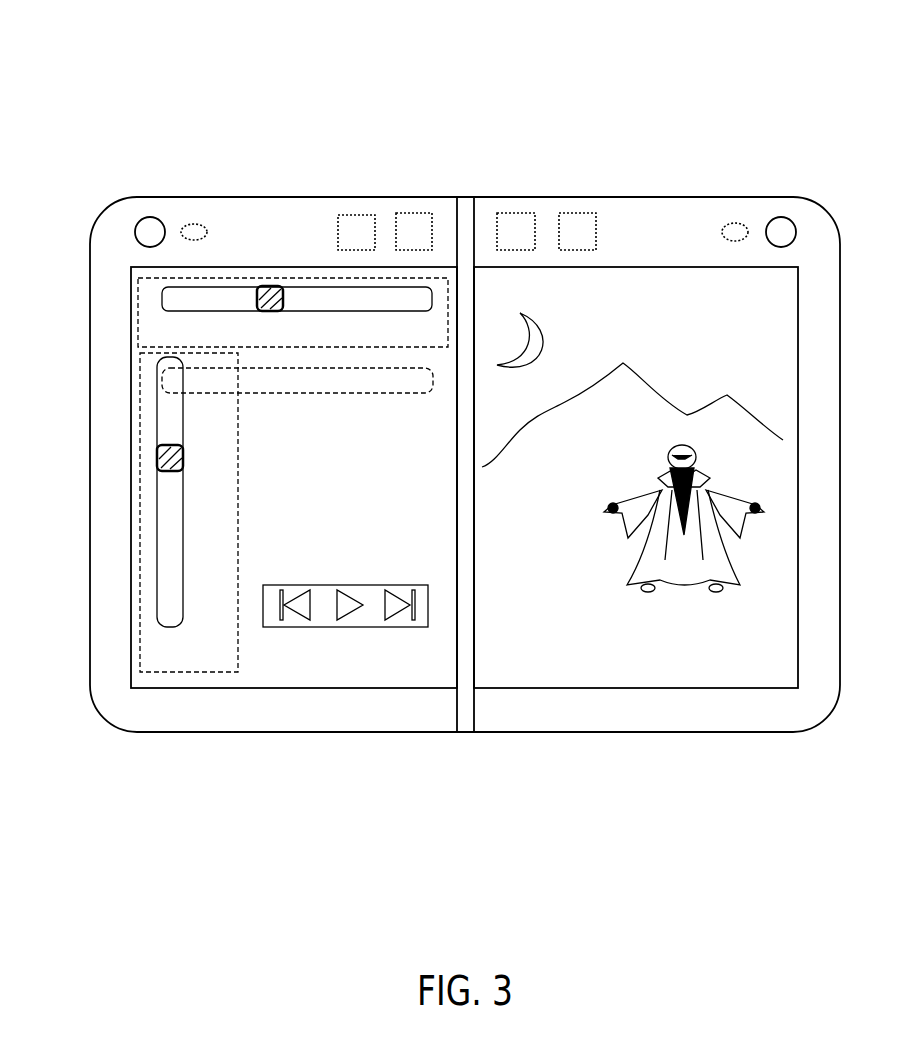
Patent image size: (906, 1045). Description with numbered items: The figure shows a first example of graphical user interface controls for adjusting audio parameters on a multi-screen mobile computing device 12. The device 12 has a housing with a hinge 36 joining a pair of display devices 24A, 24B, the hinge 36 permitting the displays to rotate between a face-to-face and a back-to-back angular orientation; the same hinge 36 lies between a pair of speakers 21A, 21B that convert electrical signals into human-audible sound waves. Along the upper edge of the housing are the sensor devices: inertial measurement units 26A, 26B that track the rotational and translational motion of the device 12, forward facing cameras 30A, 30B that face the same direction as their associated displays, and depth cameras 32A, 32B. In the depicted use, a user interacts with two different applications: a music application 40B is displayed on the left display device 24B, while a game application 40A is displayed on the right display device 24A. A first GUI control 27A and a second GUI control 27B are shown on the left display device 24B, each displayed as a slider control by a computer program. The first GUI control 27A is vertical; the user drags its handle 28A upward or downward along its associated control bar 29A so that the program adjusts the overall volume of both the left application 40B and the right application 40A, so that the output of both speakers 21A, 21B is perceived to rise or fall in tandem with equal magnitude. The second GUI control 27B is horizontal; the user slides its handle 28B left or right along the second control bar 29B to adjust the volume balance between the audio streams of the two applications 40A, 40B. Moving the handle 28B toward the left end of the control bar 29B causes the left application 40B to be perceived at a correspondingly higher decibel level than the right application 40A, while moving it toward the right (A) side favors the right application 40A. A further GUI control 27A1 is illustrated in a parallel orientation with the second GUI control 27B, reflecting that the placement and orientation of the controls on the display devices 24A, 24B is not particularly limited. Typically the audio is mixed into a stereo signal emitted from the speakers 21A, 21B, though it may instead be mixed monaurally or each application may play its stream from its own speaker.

The mobile computing device 12 is at (355, 67).
The hinge 36 is at (467, 197).
The forward facing camera 30A is at (778, 219).
The forward facing camera 30B is at (146, 218).
The depth camera 32A is at (740, 224).
The depth camera 32B is at (194, 224).
The speaker 21A is at (578, 213).
The speaker 21B is at (357, 214).
The inertial measurement unit 26A is at (517, 213).
The inertial measurement unit 26B is at (413, 212).
The right display device 24A is at (597, 678).
The left display device 24B is at (353, 678).
The first GUI control 27A is at (140, 467).
The GUI control 27A1 is at (297, 380).
The second GUI control 27B is at (136, 320).
The handle 28A is at (183, 455).
The handle 28B is at (262, 312).
The volume slider track 29A is at (183, 558).
The second control bar 29B is at (400, 312).
The game application 40A is at (512, 670).
The music application 40B is at (416, 670).